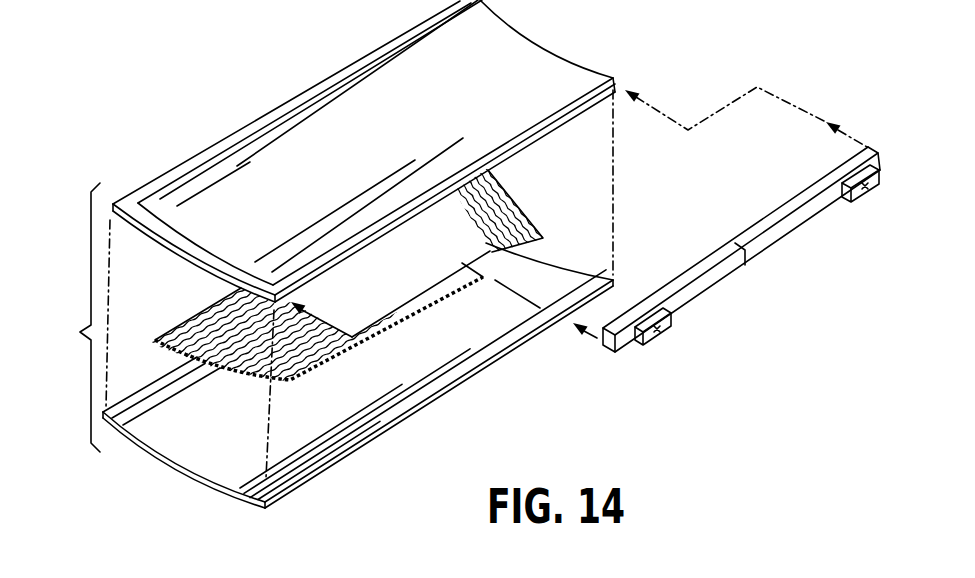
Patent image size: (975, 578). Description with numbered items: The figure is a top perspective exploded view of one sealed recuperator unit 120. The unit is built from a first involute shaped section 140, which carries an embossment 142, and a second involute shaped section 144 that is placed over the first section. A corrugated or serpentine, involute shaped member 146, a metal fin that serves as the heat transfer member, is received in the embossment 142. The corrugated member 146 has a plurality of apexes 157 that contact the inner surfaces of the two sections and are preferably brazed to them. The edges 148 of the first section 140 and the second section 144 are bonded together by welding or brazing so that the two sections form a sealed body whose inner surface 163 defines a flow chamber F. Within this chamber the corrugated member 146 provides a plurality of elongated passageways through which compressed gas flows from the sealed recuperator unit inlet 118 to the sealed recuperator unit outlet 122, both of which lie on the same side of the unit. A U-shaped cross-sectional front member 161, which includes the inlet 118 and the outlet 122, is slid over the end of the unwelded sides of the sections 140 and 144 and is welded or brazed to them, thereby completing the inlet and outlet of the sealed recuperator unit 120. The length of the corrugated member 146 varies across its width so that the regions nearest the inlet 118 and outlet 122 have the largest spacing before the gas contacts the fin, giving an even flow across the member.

The sealed recuperator unit 120 is at (65, 317).
The edges 148 is at (180, 165).
The embossment 142 is at (532, 57).
The first involute shaped section 140 is at (587, 109).
The corrugated involute shaped member 146 is at (500, 188).
The apexes 157 is at (196, 318).
The flow chamber F is at (430, 332).
The second involute shaped section 144 is at (391, 421).
The inner surface 163 is at (305, 455).
The U-shaped cross-sectional front member 161 is at (775, 213).
The sealed recuperator unit inlet 118 is at (660, 337).
The sealed recuperator unit outlet 122 is at (866, 191).